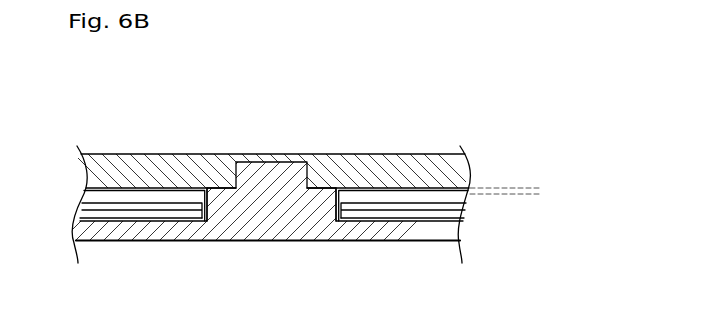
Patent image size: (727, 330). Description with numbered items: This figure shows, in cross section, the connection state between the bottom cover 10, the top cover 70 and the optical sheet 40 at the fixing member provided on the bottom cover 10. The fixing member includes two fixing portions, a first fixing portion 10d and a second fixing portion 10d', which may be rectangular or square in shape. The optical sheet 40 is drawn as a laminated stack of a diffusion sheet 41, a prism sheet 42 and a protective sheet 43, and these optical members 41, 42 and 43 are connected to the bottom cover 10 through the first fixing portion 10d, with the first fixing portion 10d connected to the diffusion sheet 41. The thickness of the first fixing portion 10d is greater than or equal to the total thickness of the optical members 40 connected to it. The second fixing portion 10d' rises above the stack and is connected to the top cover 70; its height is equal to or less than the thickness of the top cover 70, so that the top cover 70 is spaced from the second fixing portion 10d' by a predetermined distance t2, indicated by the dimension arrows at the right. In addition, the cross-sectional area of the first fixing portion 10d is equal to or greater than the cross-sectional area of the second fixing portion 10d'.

The bottom cover 10 is at (277, 228).
The first fixing portion 10d is at (221, 147).
The second fixing portion 10d' is at (271, 134).
The top cover 70 is at (363, 162).
The optical sheet 40 is at (573, 226).
The diffusion sheet 41 is at (462, 216).
The prism sheet 42 is at (462, 208).
The protective sheet 43 is at (462, 200).
The predetermined distance t2 is at (533, 167).